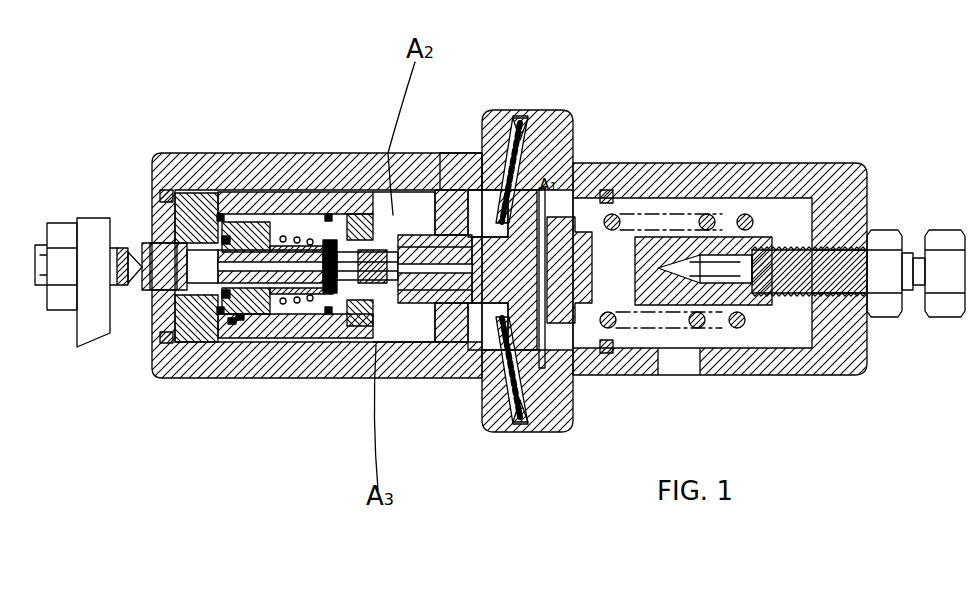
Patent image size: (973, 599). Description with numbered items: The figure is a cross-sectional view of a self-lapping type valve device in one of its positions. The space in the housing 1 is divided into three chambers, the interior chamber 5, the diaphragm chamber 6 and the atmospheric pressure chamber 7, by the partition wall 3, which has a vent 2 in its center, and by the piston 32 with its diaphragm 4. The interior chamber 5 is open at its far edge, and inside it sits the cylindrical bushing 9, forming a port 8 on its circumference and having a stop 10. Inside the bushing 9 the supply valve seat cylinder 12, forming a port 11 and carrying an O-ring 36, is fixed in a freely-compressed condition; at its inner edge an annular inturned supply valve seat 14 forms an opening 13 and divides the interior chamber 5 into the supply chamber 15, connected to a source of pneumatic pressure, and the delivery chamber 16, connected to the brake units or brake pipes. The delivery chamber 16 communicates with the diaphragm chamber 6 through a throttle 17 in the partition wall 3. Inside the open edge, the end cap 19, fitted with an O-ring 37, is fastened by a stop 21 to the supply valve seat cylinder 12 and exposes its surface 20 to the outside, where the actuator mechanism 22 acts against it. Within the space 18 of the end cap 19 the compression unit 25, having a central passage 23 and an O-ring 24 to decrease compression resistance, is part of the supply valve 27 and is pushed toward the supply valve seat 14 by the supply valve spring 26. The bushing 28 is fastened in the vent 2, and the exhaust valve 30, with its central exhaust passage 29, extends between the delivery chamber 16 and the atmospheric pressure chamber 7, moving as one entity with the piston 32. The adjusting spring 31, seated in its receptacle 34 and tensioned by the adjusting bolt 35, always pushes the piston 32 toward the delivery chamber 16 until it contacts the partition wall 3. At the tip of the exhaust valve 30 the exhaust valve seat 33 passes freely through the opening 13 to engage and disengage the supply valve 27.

The housing 1 is at (618, 170).
The vent 2 is at (458, 222).
The partition wall 3 is at (440, 212).
The diaphragm 4 is at (547, 153).
The interior chamber 5 is at (400, 215).
The diaphragm chamber 6 is at (495, 200).
The atmospheric pressure chamber 7 is at (721, 206).
The port 8 is at (262, 200).
The cylindrical bushing 9 is at (170, 155).
The stop 10 is at (157, 190).
The port 11 is at (276, 284).
The supply valve seat cylinder 12 is at (226, 232).
The opening 13 is at (335, 296).
The supply valve seat 14 is at (352, 246).
The supply chamber 15 is at (312, 302).
The delivery chamber 16 is at (393, 335).
The throttle 17 is at (447, 310).
The space 18 is at (168, 300).
The end cap 19 is at (146, 240).
The surface 20 is at (135, 290).
The stop 21 is at (165, 345).
The actuator mechanism 22 is at (97, 238).
The central passage 23 is at (232, 325).
The seal 24 is at (252, 320).
The compression unit 25 is at (340, 283).
The supply valve spring 26 is at (297, 228).
The supply valve 27 is at (352, 326).
The bushing 28 is at (405, 305).
The central exhaust passage 29 is at (456, 322).
The exhaust valve 30 is at (368, 285).
The adjusting spring 31 is at (705, 328).
The piston 32 is at (516, 412).
The exhaust valve seat 33 is at (372, 216).
The receptacle 34 is at (772, 225).
The adjusting bolt 35 is at (851, 247).
The O-ring 36 is at (218, 210).
The O-ring 37 is at (207, 345).